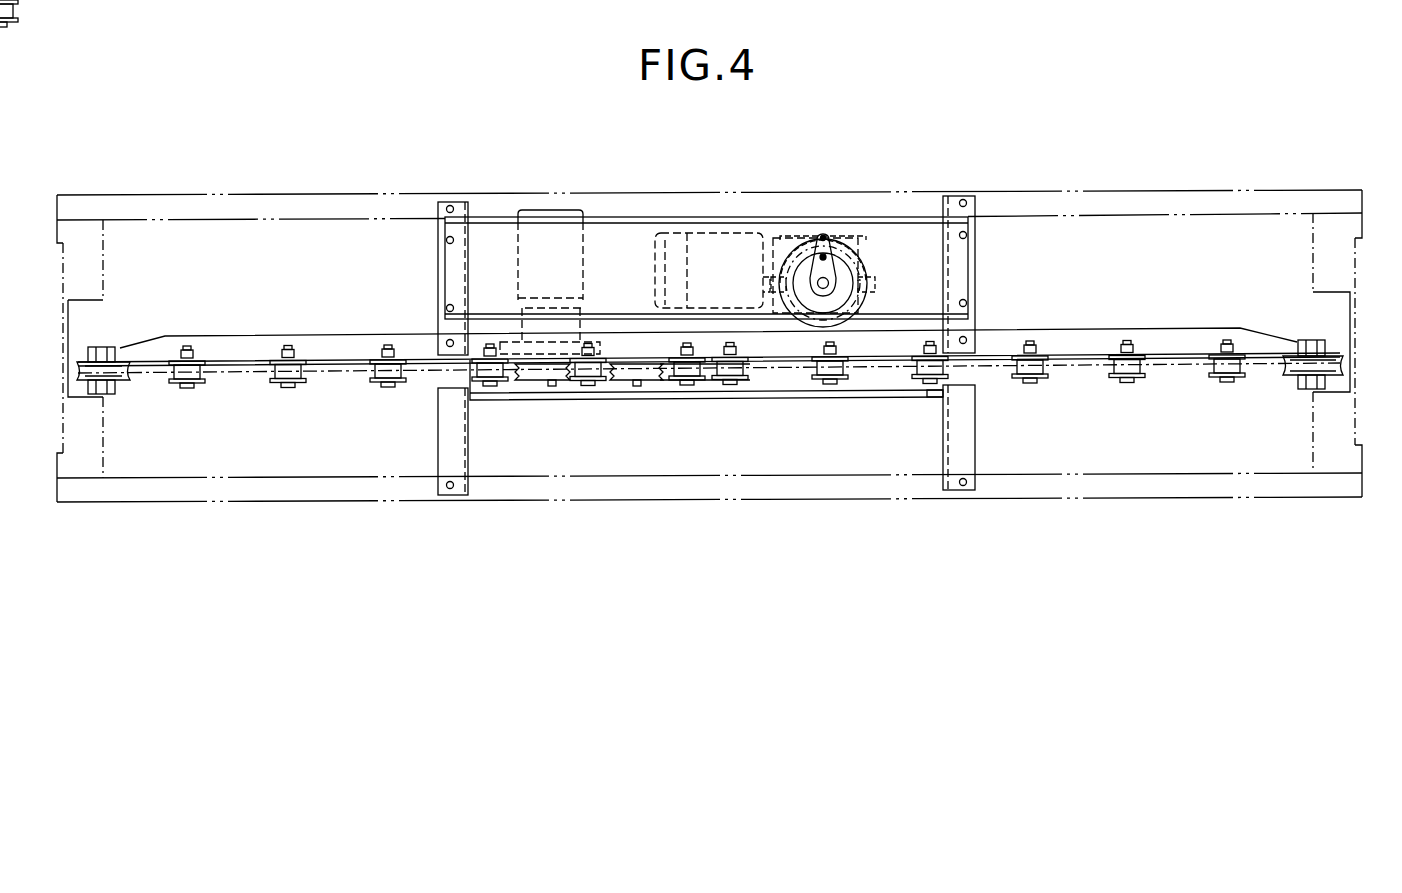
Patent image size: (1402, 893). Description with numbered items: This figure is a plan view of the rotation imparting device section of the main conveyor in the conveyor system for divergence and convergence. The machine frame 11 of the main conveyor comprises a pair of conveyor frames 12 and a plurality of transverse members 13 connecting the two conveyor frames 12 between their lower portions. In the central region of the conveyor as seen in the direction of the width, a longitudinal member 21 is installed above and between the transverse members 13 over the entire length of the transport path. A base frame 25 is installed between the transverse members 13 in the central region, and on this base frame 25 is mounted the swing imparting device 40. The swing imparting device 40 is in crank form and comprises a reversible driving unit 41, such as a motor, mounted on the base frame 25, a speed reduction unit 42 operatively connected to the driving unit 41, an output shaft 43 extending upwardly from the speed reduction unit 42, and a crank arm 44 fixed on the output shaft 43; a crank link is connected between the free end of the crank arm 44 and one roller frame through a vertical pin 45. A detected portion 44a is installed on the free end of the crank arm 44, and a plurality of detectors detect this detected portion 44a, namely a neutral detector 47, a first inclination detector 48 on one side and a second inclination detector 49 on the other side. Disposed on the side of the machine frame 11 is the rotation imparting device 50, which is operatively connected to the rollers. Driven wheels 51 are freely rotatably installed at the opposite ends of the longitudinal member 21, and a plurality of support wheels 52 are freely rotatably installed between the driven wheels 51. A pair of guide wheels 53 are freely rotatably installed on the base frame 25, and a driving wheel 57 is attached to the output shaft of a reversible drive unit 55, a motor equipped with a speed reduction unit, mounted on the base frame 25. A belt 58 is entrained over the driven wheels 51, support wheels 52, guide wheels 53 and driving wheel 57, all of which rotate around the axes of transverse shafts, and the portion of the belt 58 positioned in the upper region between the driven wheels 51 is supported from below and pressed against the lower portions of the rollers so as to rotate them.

The machine frame 11 is at (1074, 190).
The conveyor frame 12 is at (1196, 200).
The transverse member 13 is at (440, 455).
The longitudinal member 21 is at (1073, 355).
The base frame 25 is at (625, 237).
The swing imparting device 40 is at (864, 249).
The reversible driving unit 41 is at (713, 233).
The speed reduction unit 42 is at (778, 240).
The output shaft 43 is at (827, 289).
The crank arm 44 is at (830, 272).
The detected portion 44a is at (828, 238).
The vertical pin 45 is at (821, 254).
The neutral detector 47 is at (827, 236).
The first inclination detector 48 is at (766, 279).
The second inclination detector 49 is at (873, 281).
The rotation imparting device 50 is at (522, 392).
The driven wheel 51 is at (120, 386).
The support wheel 52 is at (378, 385).
The guide wheel 53 is at (648, 401).
The reversible drive unit 55 is at (557, 210).
The driving wheel 57 is at (563, 381).
The belt 58 is at (253, 375).